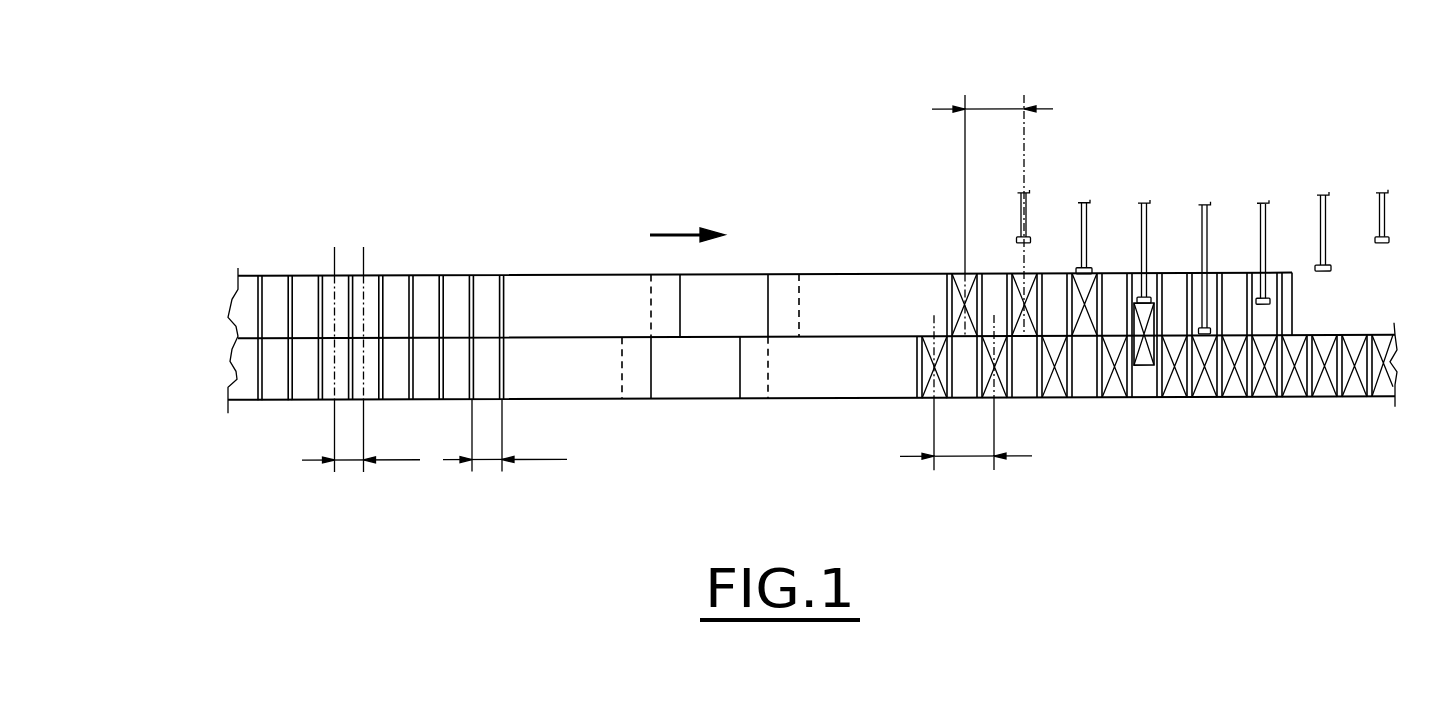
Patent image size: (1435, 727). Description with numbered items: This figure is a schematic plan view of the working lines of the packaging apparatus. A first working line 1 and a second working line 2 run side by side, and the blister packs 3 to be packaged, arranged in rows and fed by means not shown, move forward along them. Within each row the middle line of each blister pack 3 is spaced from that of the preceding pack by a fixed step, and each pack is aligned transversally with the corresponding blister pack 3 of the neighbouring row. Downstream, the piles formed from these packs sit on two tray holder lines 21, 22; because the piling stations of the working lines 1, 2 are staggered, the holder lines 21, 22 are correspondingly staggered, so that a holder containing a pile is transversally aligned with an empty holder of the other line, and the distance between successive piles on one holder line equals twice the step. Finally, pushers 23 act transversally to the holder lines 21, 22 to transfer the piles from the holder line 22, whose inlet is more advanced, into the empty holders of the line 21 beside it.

The first working line 1 is at (290, 412).
The second working line 2 is at (298, 256).
The blister pack 3 is at (273, 307).
The holder line 21 is at (1208, 405).
The holder line 22 is at (1170, 252).
The pusher 23 is at (1325, 270).